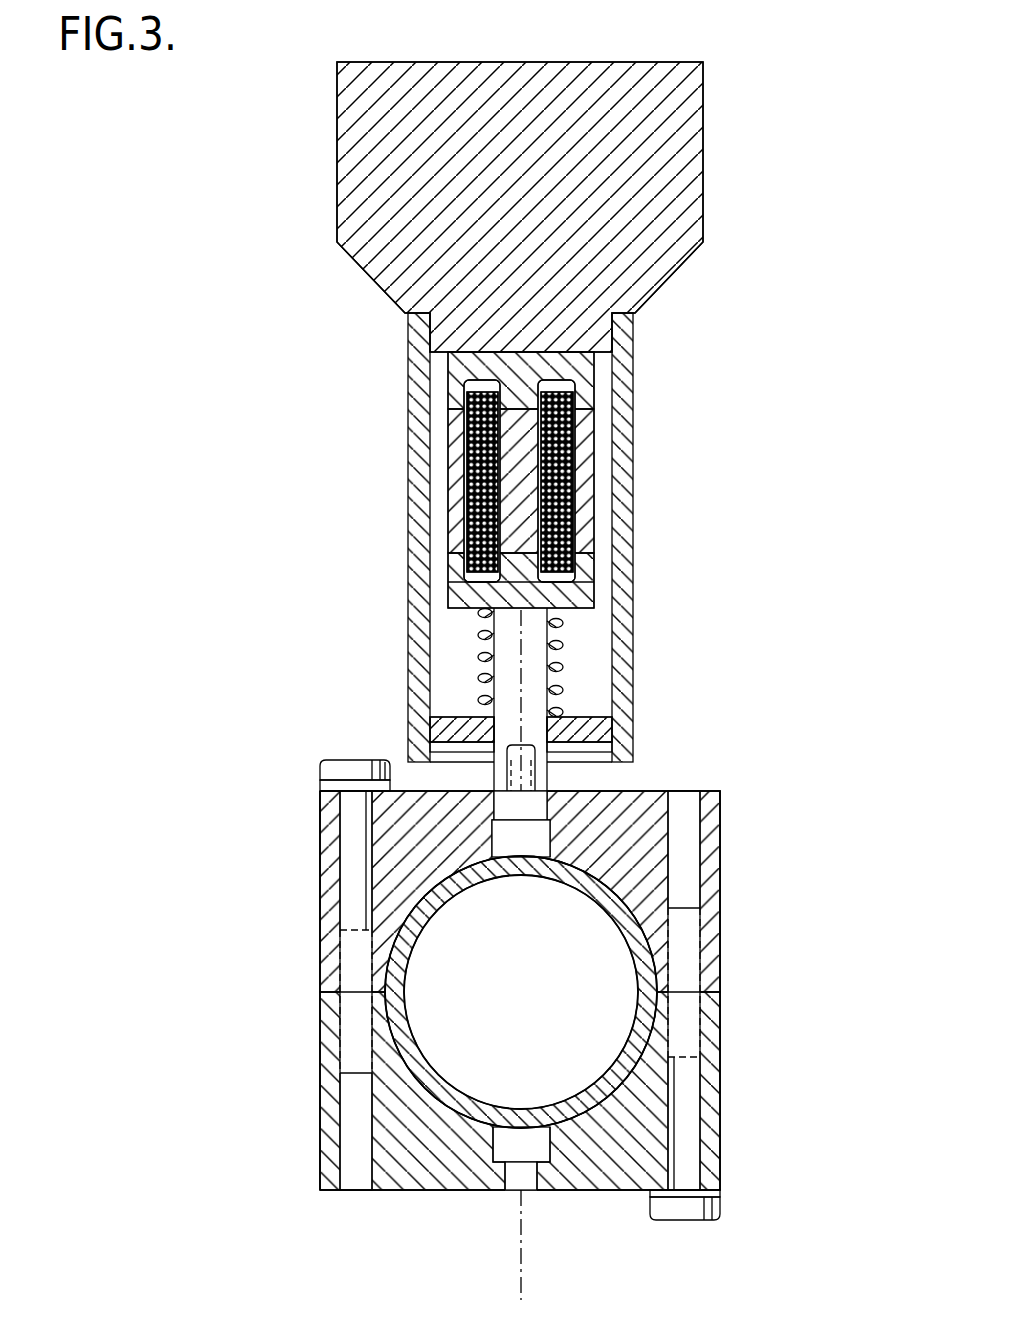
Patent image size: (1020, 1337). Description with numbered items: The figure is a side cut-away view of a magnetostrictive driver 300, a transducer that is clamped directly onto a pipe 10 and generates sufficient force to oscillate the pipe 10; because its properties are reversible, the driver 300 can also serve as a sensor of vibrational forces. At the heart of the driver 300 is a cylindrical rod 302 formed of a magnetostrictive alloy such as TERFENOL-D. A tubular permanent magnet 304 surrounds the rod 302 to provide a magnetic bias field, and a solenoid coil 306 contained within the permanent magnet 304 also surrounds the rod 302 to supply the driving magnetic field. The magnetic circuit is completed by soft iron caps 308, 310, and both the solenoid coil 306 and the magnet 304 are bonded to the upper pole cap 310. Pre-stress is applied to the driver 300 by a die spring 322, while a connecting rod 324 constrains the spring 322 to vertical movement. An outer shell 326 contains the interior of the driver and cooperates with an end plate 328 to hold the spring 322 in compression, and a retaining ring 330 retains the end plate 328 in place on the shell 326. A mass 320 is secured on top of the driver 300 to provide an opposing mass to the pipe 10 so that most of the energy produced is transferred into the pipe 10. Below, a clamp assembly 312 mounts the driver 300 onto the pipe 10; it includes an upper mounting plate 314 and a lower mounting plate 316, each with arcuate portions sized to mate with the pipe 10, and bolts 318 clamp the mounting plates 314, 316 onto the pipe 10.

The driver 300 is at (742, 162).
The cylindrical rod 302 is at (523, 492).
The tubular permanent magnet 304 is at (457, 433).
The solenoid coil 306 is at (468, 500).
The soft iron cap 308 is at (448, 584).
The upper pole cap 310 is at (620, 382).
The clamp assembly 312 is at (748, 908).
The upper mounting plate 314 is at (722, 840).
The lower mounting plate 316 is at (722, 1083).
The bolts 318 is at (322, 768).
The mass 320 is at (662, 248).
The die spring 322 is at (563, 668).
The connecting rod 324 is at (494, 640).
The outer shell 326 is at (633, 592).
The end plate 328 is at (436, 728).
The retaining ring 330 is at (634, 735).
The pipe 10 is at (413, 936).